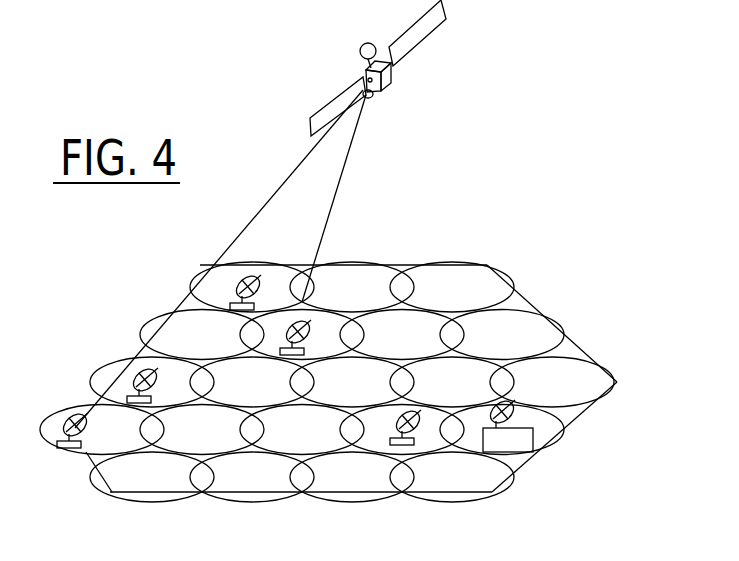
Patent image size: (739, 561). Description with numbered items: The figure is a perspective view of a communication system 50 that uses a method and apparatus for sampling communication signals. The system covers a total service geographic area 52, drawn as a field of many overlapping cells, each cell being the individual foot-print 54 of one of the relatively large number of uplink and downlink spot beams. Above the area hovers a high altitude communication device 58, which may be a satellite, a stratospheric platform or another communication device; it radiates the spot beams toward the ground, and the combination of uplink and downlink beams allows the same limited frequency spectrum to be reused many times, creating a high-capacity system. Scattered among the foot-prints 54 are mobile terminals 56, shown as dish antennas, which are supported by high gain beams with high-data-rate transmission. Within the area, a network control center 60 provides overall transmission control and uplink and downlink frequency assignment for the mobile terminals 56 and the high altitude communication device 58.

The communication system 50 is at (590, 129).
The total service geographic area 52 is at (243, 498).
The foot-prints 54 is at (273, 262).
The mobile terminals 56 is at (130, 373).
The high altitude communication device 58 is at (387, 78).
The network control center 60 is at (537, 442).